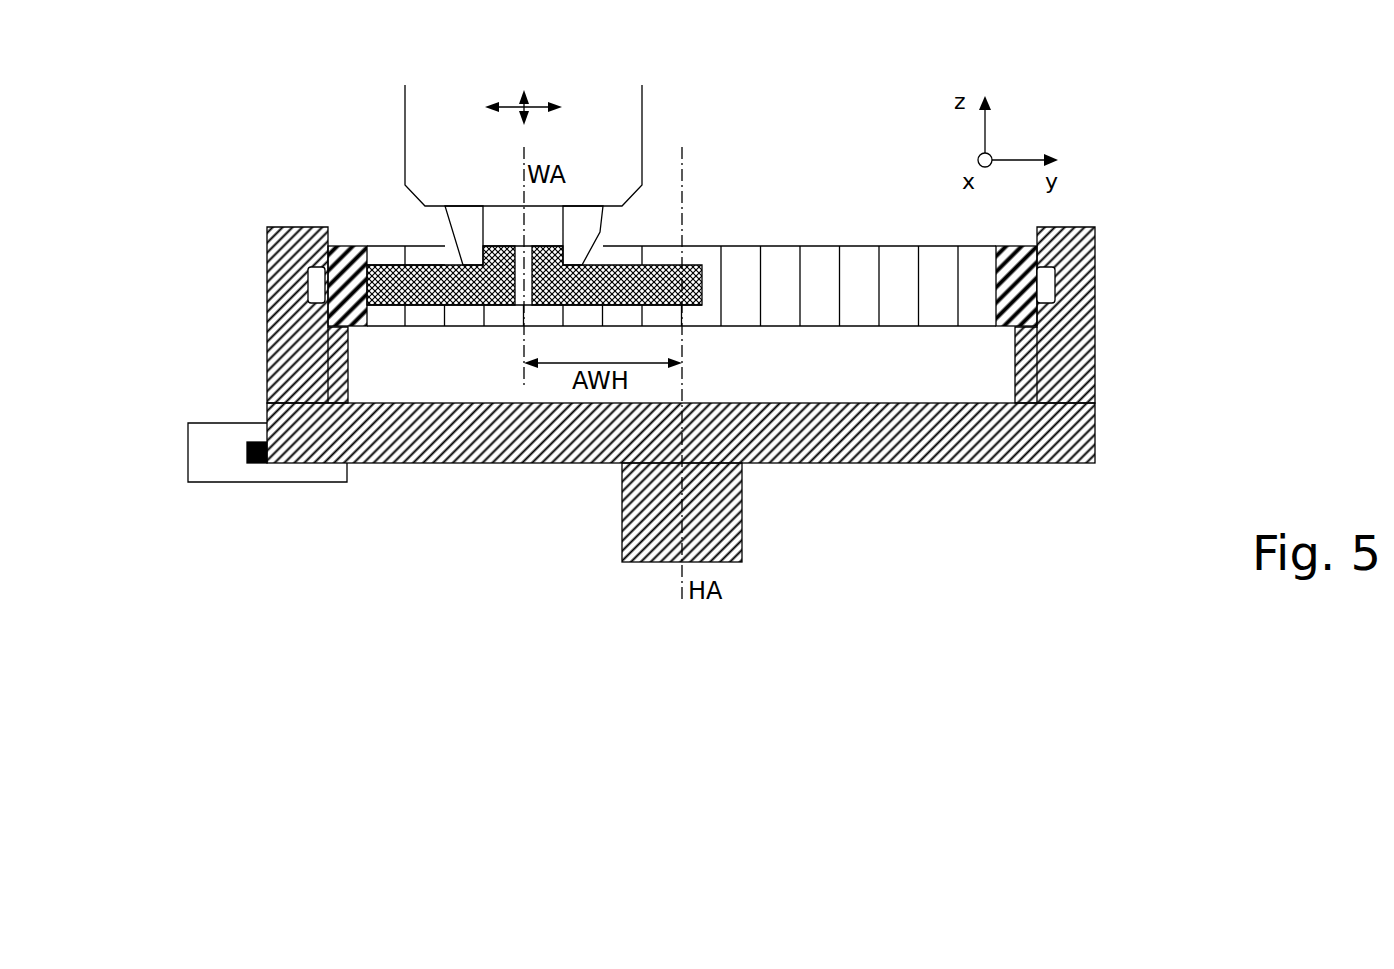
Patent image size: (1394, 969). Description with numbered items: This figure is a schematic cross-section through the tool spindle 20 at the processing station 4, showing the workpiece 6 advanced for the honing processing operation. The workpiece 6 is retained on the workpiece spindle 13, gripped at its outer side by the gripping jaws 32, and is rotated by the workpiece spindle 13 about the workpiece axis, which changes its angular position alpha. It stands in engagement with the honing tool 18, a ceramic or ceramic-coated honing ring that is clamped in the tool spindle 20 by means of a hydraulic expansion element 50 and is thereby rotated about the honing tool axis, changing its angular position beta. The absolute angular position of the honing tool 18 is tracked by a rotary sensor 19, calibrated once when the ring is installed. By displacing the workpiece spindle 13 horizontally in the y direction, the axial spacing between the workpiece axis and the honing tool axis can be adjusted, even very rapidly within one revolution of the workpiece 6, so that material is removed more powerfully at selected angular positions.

The processing station 4 is at (841, 155).
The workpiece 6 is at (470, 290).
The workpiece spindle 13 is at (615, 110).
The honing tool 18 is at (343, 246).
The rotary sensor 19 is at (233, 472).
The tool spindle 20 is at (255, 250).
The gripping jaws 32 is at (588, 223).
The hydraulic expansion element 50 is at (312, 268).